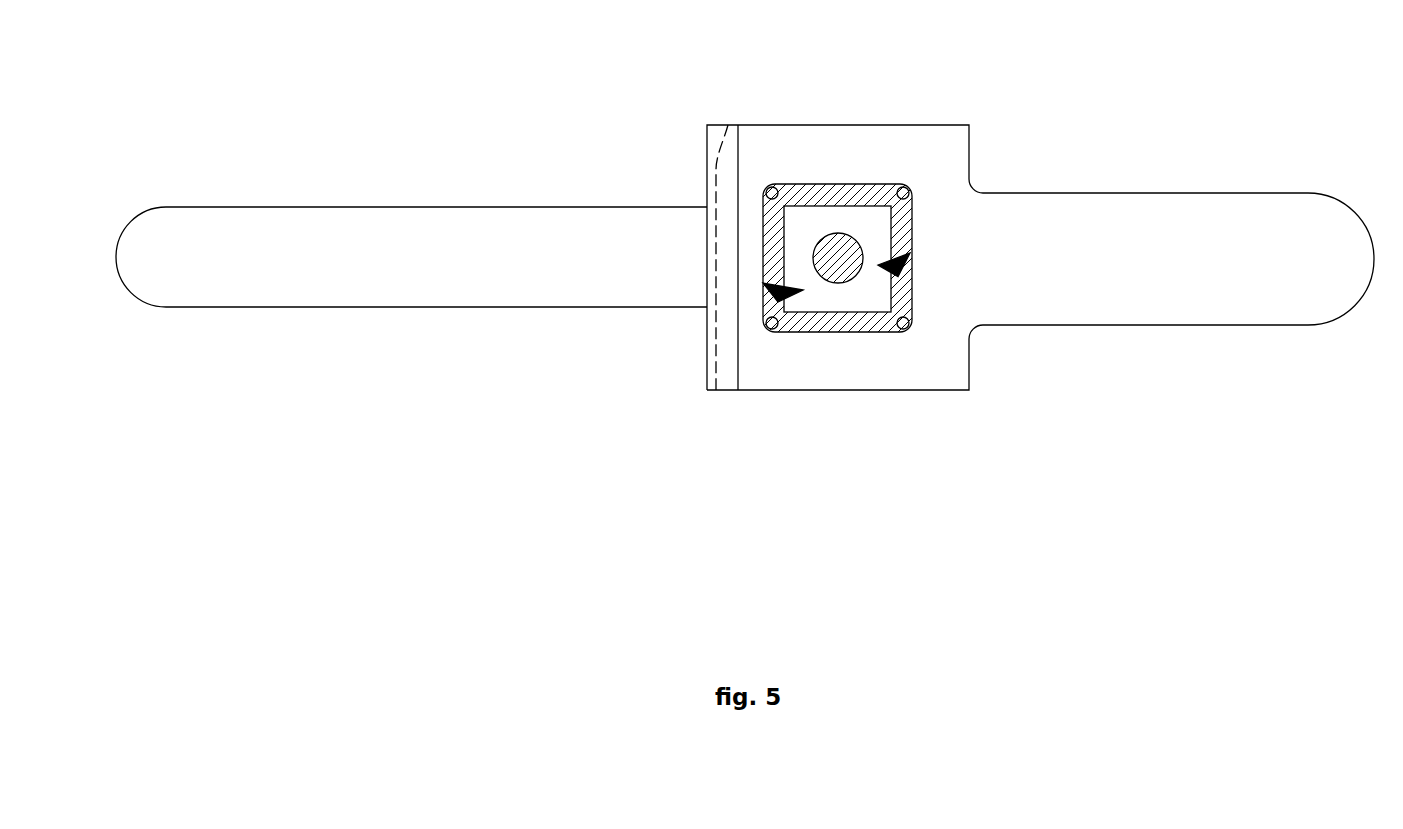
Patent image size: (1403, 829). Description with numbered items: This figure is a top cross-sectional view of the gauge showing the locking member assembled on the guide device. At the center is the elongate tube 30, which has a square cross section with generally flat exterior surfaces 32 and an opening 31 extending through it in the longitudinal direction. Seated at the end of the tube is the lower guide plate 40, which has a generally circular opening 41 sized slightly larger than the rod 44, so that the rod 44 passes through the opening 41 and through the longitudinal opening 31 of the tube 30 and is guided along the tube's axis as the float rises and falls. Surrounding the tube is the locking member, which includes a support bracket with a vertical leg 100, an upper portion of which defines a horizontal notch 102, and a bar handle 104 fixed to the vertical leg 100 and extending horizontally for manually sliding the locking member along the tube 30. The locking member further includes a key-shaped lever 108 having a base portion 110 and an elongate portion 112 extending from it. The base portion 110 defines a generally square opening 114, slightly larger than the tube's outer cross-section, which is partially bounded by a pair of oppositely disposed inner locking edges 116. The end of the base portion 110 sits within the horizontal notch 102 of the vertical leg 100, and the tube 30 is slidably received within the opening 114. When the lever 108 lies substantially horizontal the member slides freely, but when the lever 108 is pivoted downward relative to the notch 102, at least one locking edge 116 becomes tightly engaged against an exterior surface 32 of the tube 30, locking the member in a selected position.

The elongate tube 30 is at (832, 192).
The opening 31 is at (822, 212).
The exterior surfaces 32 is at (765, 243).
The guide plate 40 is at (821, 300).
The circular opening 41 is at (847, 260).
The rod 44 is at (833, 283).
The vertical leg 100 is at (725, 391).
The horizontal notch 102 is at (728, 125).
The bar handle 104 is at (375, 308).
The key-shaped lever 108 is at (969, 125).
The base portion 110 is at (928, 392).
The elongate portion 112 is at (1225, 327).
The square opening 114 is at (805, 330).
The inner locking edges 116 is at (803, 290).